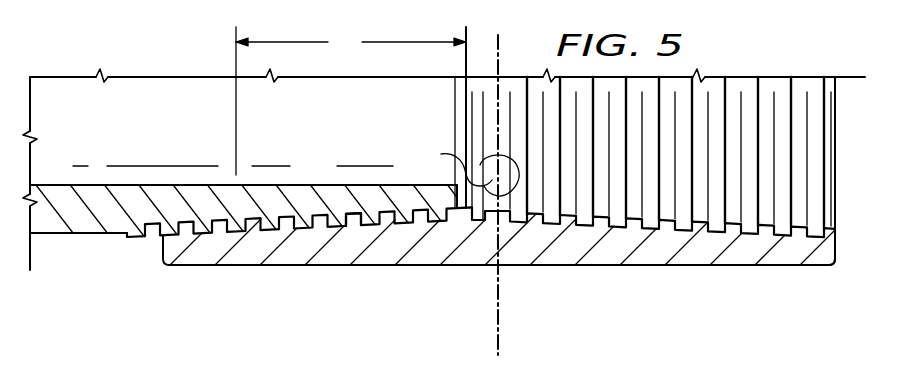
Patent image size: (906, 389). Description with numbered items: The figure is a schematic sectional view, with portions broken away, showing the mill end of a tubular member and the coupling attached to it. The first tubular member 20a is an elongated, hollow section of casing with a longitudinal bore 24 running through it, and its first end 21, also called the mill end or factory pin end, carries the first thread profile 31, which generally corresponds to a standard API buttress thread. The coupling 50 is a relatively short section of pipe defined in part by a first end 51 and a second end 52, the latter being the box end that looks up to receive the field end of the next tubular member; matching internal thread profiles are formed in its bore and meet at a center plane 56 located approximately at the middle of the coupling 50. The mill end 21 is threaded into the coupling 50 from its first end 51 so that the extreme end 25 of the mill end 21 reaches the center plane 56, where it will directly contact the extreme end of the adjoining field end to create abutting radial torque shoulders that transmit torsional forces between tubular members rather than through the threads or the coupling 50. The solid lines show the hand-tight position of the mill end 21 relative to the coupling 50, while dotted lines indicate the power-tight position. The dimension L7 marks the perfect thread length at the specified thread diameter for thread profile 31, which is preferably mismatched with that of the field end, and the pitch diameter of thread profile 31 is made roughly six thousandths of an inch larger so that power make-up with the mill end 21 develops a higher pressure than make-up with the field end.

The longitudinal bore 24 is at (166, 151).
The first end 21 is at (337, 194).
The extreme end 25 is at (471, 148).
The first tubular member 20a is at (91, 240).
The first end 51 is at (160, 252).
The first thread profile 31 is at (352, 226).
The center plane 56 is at (497, 302).
The coupling 50 is at (594, 272).
The second end 52 is at (838, 257).
The perfect thread length L7 is at (351, 117).